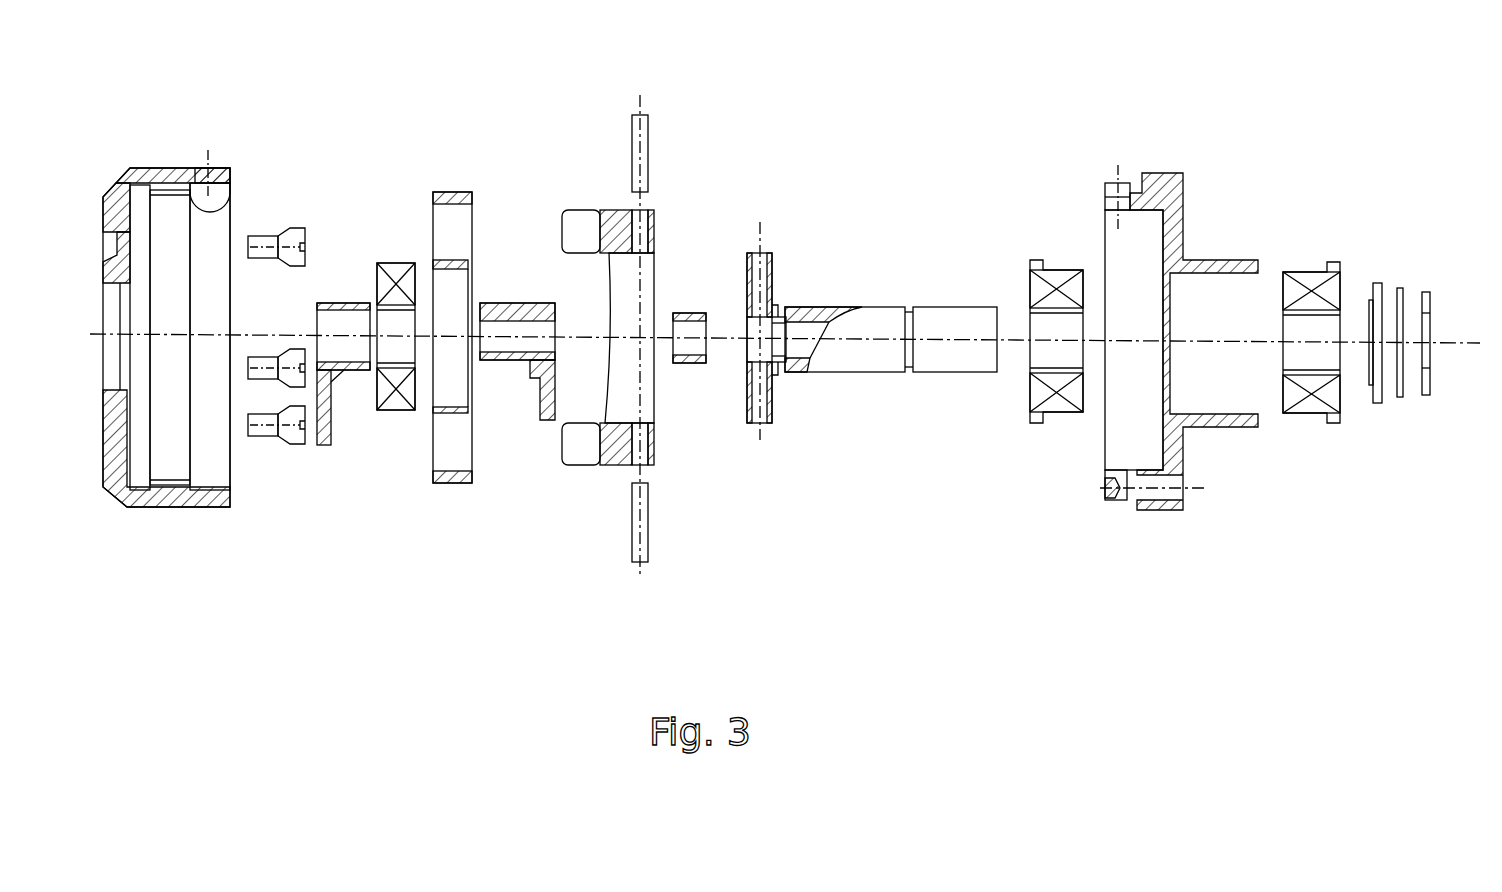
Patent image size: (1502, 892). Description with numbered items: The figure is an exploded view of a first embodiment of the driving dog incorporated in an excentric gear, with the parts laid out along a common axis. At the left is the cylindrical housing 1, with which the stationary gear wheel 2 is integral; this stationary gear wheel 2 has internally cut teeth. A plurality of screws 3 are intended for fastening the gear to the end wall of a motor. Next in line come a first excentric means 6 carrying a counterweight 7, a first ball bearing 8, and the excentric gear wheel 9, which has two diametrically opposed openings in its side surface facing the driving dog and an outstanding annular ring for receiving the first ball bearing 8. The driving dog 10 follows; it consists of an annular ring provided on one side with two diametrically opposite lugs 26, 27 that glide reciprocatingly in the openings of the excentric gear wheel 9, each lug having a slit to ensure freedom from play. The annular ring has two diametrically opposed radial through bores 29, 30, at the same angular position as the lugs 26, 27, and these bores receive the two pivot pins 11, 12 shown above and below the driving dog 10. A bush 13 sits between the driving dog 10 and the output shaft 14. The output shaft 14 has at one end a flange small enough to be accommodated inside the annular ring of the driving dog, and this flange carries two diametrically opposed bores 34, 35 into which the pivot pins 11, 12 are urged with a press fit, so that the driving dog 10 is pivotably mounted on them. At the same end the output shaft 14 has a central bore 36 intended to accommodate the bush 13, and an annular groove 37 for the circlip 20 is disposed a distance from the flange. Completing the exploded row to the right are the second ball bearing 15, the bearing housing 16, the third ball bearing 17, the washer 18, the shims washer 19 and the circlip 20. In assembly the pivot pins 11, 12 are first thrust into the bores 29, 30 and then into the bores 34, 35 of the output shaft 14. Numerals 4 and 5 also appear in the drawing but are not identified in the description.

The cylindrical housing 1 is at (157, 168).
The stationary gear wheel 2 is at (233, 193).
The screws 3 is at (282, 240).
The hub 4 is at (530, 307).
The hub flange 5 is at (540, 400).
The first excentric means 6 is at (338, 303).
The counterweight 7 is at (320, 437).
The first ball bearing 8 is at (397, 400).
The excentric gear wheel 9 is at (445, 443).
The driving dog 10 is at (622, 463).
The pivot pin 11 is at (640, 152).
The pivot pin 12 is at (637, 550).
The bush 13 is at (692, 312).
The output shaft 14 is at (927, 322).
The second ball bearing 15 is at (1050, 288).
The bearing housing 16 is at (1162, 187).
The third ball bearing 17 is at (1308, 282).
The washer 18 is at (1378, 403).
The shims washer 19 is at (1400, 398).
The circlip 20 is at (1425, 393).
The lug 26 is at (587, 227).
The lug 27 is at (580, 447).
The radial through bore 29 is at (654, 230).
The radial through bore 30 is at (638, 445).
The bore 34 is at (763, 287).
The bore 35 is at (757, 425).
The central bore 36 is at (805, 350).
The annular groove 37 is at (913, 375).